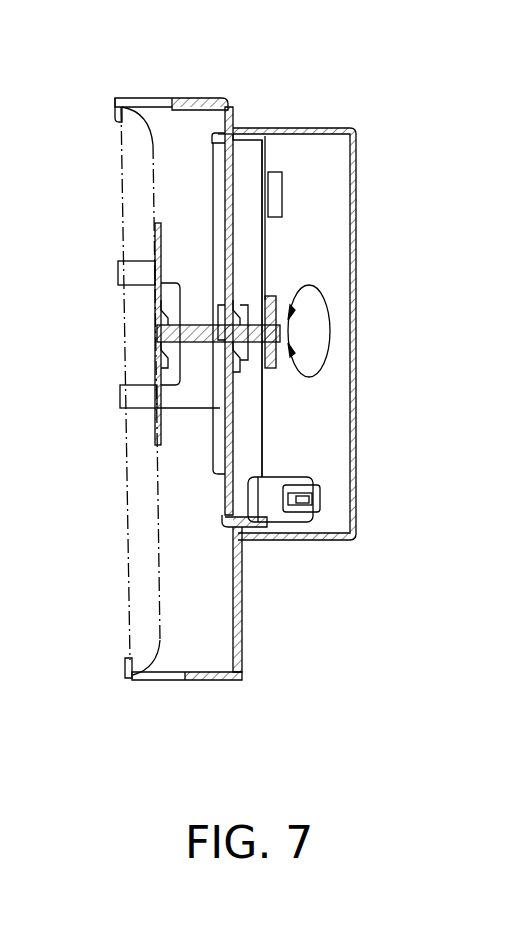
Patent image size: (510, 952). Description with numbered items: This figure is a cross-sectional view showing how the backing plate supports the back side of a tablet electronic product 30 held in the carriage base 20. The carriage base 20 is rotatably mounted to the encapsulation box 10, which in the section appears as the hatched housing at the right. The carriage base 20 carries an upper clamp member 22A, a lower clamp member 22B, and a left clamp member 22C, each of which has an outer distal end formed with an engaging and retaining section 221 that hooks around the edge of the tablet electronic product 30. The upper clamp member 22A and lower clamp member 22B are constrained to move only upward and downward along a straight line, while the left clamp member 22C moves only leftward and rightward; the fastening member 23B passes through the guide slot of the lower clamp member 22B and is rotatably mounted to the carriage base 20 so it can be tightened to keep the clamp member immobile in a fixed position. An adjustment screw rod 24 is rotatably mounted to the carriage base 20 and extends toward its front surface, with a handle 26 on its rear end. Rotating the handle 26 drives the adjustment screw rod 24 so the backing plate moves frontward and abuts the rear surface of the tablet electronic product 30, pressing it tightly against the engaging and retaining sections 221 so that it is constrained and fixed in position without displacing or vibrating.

The encapsulation box 10 is at (354, 280).
The carriage base 20 is at (227, 389).
The upper clamp member 22A is at (229, 247).
The lower clamp member 22B is at (238, 600).
The left clamp member 22C is at (190, 408).
The engaging and retaining section 221 is at (142, 98).
The adjustment screw rod 24 is at (202, 333).
The handle 26 is at (161, 246).
The fastening member 23B is at (322, 498).
The tablet electronic product 30 is at (128, 484).